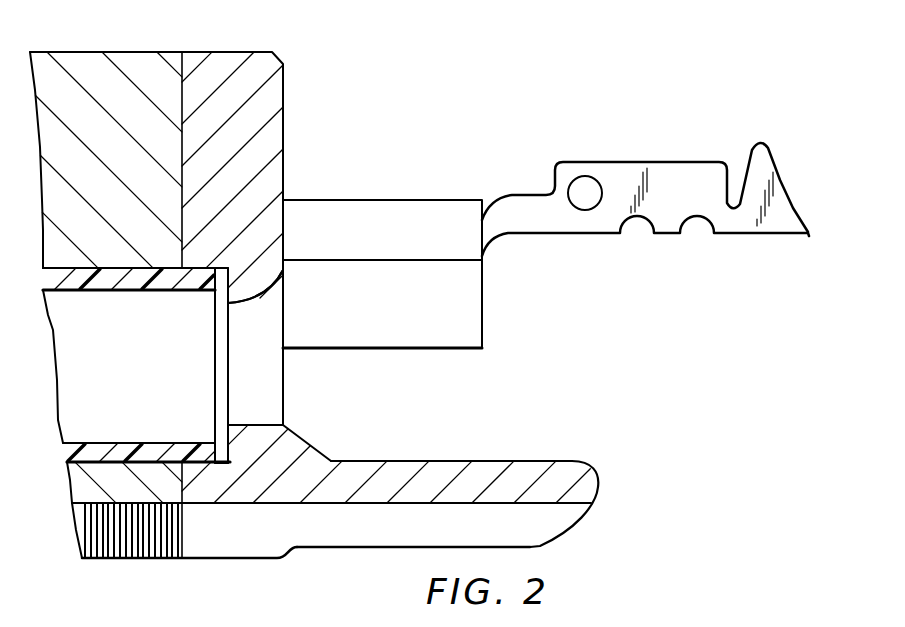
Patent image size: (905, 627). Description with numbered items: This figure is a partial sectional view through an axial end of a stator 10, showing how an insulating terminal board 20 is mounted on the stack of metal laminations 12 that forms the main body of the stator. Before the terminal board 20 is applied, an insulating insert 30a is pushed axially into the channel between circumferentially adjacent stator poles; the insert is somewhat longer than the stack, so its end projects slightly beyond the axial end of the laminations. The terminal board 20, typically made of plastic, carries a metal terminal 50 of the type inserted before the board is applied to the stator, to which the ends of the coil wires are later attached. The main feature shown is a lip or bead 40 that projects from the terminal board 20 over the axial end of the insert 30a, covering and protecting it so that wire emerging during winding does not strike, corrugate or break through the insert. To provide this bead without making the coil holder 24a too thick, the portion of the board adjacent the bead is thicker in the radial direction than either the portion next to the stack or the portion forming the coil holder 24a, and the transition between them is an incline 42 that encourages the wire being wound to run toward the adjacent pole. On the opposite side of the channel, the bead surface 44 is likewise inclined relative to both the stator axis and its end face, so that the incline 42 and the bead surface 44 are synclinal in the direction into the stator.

The stator 10 is at (308, 85).
The stack of metal laminations 12 is at (66, 72).
The terminal board 20 is at (217, 64).
The coil holder 24a is at (523, 490).
The insulating insert 30a is at (122, 452).
The lip or bead 40 is at (243, 292).
The incline 42 is at (307, 442).
The bead surface 44 is at (283, 286).
The terminal 50 is at (568, 236).